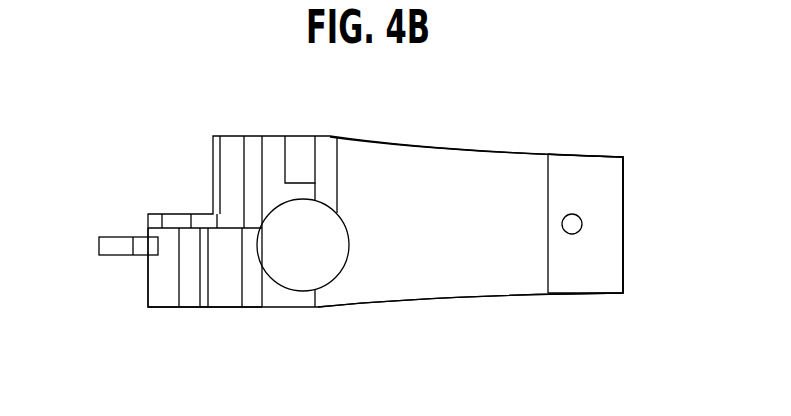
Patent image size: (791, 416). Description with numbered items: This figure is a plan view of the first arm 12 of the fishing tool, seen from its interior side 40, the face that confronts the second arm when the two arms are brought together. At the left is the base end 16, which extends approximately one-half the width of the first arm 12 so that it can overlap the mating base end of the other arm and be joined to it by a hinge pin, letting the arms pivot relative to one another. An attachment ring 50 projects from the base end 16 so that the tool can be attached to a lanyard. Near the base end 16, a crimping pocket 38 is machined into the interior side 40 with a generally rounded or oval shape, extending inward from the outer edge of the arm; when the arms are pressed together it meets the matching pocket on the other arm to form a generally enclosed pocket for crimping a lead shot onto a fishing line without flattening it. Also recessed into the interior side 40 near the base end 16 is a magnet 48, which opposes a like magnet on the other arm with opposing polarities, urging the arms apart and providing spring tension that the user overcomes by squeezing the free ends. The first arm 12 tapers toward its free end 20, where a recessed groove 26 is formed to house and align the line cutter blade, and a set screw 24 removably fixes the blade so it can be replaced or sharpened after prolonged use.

The first arm 12 is at (500, 309).
The base end 16 is at (165, 290).
The free end 20 is at (636, 202).
The set screw 24 is at (583, 216).
The recessed groove 26 is at (609, 283).
The crimping pocket 38 is at (300, 155).
The interior side 40 is at (439, 237).
The magnet 48 is at (295, 255).
The attachment ring 50 is at (116, 247).